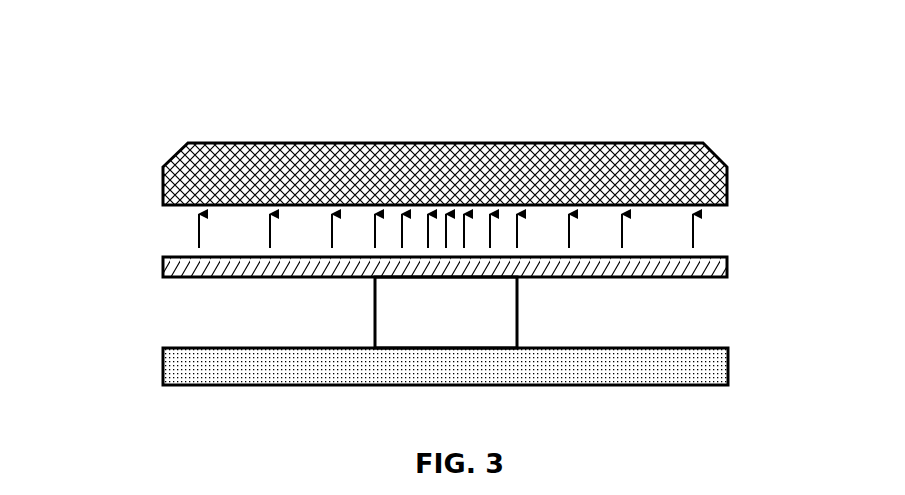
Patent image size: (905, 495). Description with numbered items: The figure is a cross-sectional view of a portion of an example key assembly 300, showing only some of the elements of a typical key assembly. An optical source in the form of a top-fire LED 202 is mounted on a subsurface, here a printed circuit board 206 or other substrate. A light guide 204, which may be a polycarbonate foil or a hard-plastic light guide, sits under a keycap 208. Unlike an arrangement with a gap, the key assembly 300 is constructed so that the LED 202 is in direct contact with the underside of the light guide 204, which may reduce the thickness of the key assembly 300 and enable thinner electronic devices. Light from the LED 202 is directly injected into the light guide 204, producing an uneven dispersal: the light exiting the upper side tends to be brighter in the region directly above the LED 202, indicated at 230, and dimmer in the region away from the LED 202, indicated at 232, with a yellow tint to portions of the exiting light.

The key assembly 300 is at (102, 104).
The LED 202 is at (393, 313).
The light guide 204 is at (165, 265).
The printed circuit board 206 is at (181, 365).
The keycap 208 is at (662, 168).
The region directly above the LED 230 is at (455, 230).
The region away from the LED 232 is at (225, 228).